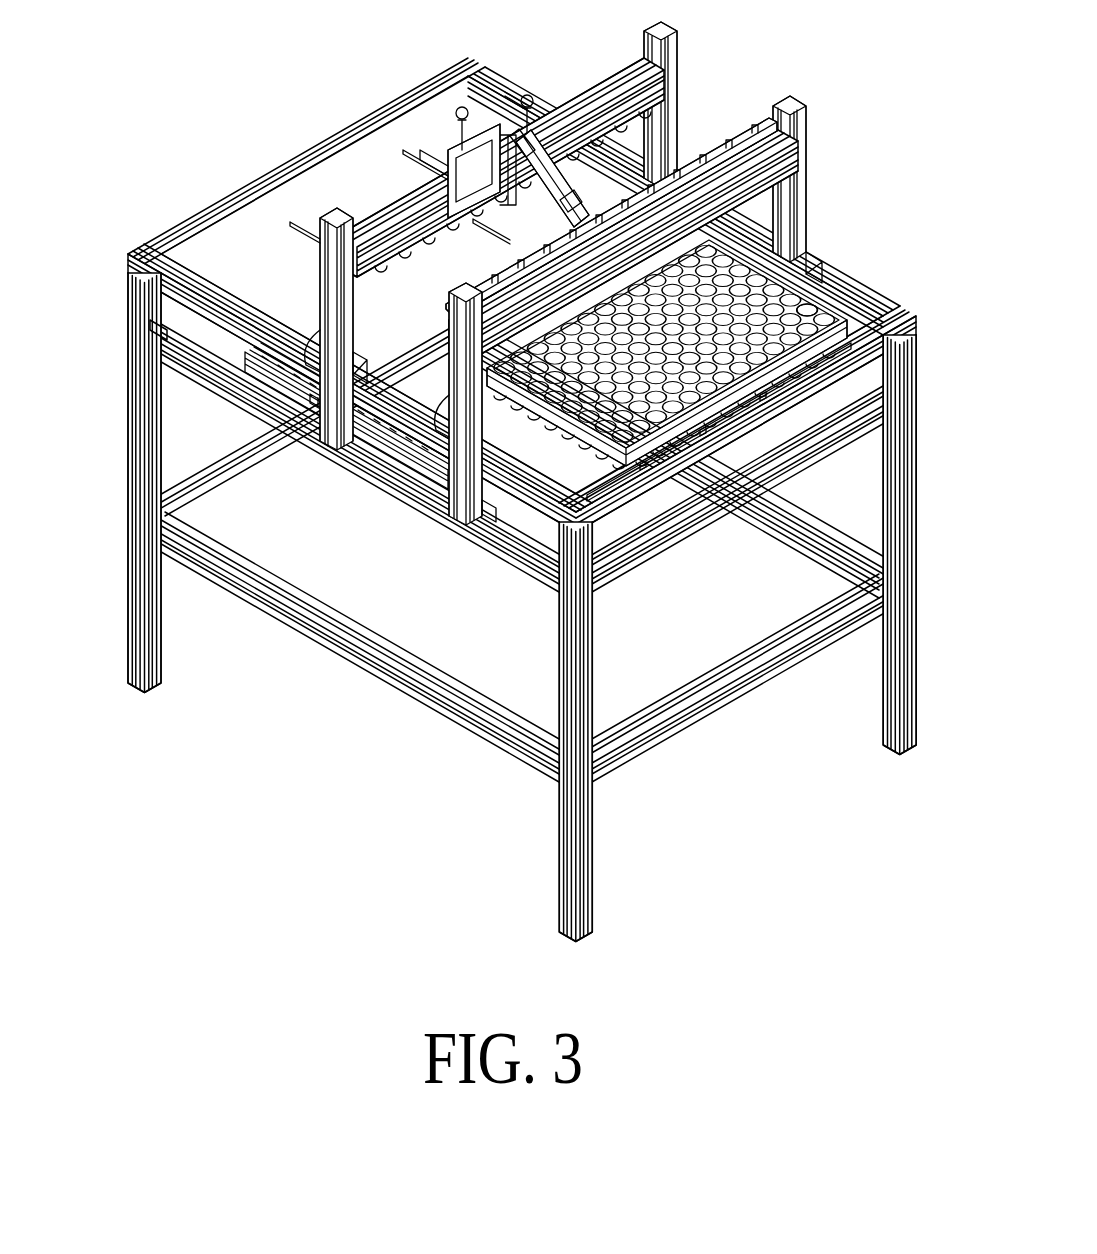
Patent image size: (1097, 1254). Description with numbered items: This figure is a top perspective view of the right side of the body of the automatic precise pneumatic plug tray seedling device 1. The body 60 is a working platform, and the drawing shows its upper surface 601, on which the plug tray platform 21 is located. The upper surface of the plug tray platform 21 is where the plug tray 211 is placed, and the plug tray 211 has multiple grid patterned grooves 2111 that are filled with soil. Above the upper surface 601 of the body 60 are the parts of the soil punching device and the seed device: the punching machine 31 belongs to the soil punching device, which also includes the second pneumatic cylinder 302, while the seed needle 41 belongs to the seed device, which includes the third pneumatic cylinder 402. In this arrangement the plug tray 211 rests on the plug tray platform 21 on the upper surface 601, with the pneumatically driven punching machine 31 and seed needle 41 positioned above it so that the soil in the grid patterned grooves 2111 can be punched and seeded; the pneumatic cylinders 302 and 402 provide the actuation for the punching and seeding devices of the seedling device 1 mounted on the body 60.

The automatic precise pneumatic plug tray seedling device 1 is at (505, 480).
The body 60 is at (231, 245).
The upper surface 601 is at (328, 193).
The second pneumatic cylinder 302 is at (445, 142).
The third pneumatic cylinder 402 is at (568, 192).
The seed needle 41 is at (681, 178).
The grid patterned groove 2111 is at (813, 311).
The plug tray 211 is at (856, 308).
The plug tray platform 21 is at (588, 458).
The punching machine 31 is at (388, 252).